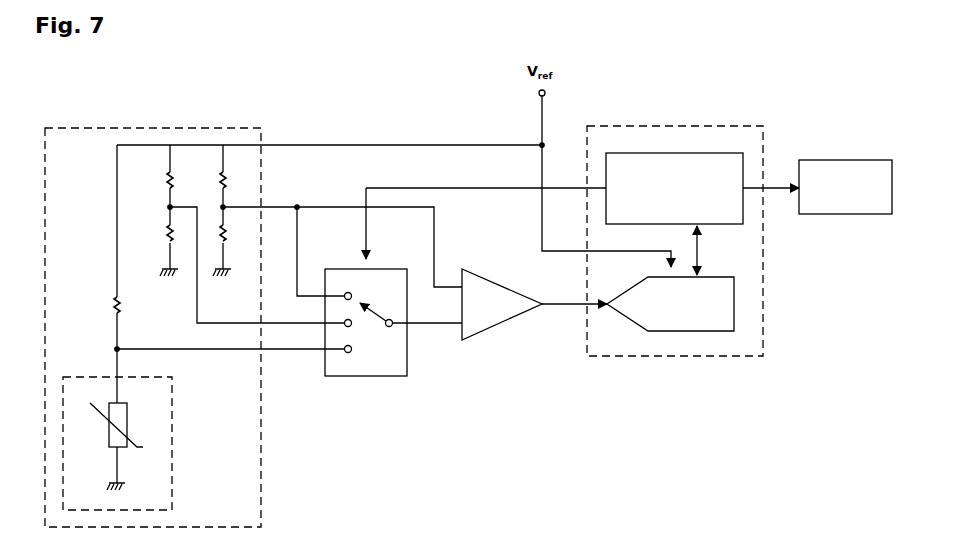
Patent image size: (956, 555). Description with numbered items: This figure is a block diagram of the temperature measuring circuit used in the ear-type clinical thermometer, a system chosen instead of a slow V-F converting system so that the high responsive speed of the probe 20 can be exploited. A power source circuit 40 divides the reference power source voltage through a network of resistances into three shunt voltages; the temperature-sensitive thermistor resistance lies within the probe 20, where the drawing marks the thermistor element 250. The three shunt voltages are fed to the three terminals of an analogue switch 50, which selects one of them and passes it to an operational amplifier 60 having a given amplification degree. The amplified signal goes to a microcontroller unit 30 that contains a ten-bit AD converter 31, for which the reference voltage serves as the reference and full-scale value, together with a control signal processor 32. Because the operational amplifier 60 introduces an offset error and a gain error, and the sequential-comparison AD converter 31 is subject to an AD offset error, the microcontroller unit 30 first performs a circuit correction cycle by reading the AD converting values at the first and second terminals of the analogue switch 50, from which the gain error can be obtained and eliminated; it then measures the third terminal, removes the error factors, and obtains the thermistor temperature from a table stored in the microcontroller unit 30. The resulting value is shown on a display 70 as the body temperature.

The probe 20 is at (150, 443).
The thermistor Rth 250 is at (130, 428).
The microcontroller unit (MCU) 30 is at (675, 266).
The AD converter 31 is at (668, 331).
The control signal processor 32 is at (665, 153).
The power source circuit 40 is at (181, 128).
The analogue switch 50 is at (392, 376).
The operational amplifier 60 is at (494, 328).
The display 70 is at (832, 160).